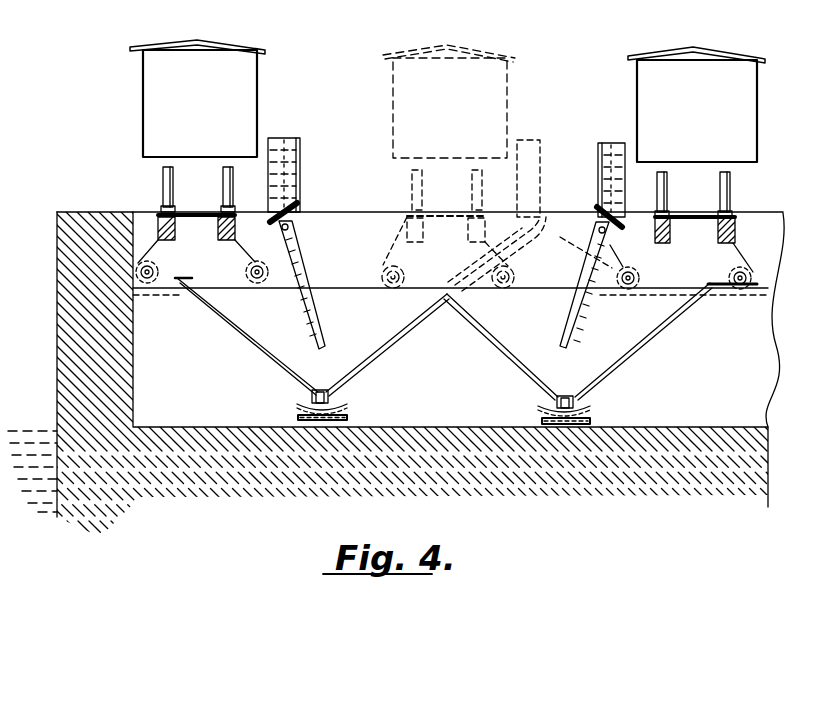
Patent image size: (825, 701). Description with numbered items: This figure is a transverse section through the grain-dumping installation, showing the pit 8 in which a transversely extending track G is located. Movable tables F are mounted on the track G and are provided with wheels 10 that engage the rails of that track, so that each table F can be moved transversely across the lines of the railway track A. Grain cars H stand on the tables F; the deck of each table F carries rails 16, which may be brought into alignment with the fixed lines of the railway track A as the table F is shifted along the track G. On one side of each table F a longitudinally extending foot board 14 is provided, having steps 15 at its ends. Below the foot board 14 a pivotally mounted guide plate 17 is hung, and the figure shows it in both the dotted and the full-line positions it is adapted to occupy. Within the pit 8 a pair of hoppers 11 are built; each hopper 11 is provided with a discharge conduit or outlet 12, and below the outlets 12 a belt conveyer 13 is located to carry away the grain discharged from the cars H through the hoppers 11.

The pit 8 is at (467, 420).
The grain car H is at (242, 88).
The rail 16 is at (163, 208).
The railway track A is at (172, 212).
The wheel 10 is at (247, 265).
The transversely extending track G is at (328, 288).
The foot board 14 is at (280, 140).
The step 15 is at (287, 173).
The movable table F is at (292, 203).
The guide plate 17 is at (302, 257).
The hopper 11 is at (267, 332).
The discharge conduit 12 is at (320, 390).
The belt conveyer 13 is at (343, 405).